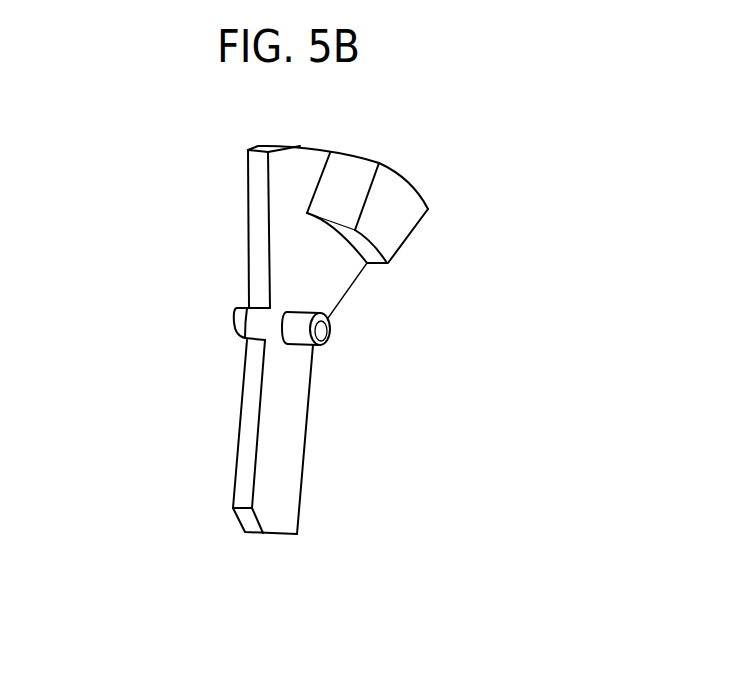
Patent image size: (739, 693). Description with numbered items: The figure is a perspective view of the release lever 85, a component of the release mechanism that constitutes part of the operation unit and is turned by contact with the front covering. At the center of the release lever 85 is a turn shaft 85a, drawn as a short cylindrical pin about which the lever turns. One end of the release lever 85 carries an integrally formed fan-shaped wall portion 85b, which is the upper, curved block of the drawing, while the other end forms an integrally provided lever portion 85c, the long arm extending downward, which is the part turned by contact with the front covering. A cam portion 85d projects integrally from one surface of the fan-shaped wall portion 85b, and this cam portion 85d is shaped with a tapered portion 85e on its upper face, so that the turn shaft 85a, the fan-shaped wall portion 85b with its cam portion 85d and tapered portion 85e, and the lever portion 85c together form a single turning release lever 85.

The release lever 85 is at (140, 218).
The turn shaft 85a is at (323, 331).
The fan-shaped wall portion 85b is at (300, 255).
The lever portion 85c is at (283, 457).
The cam portion 85d is at (392, 227).
The tapered portion 85e is at (345, 190).